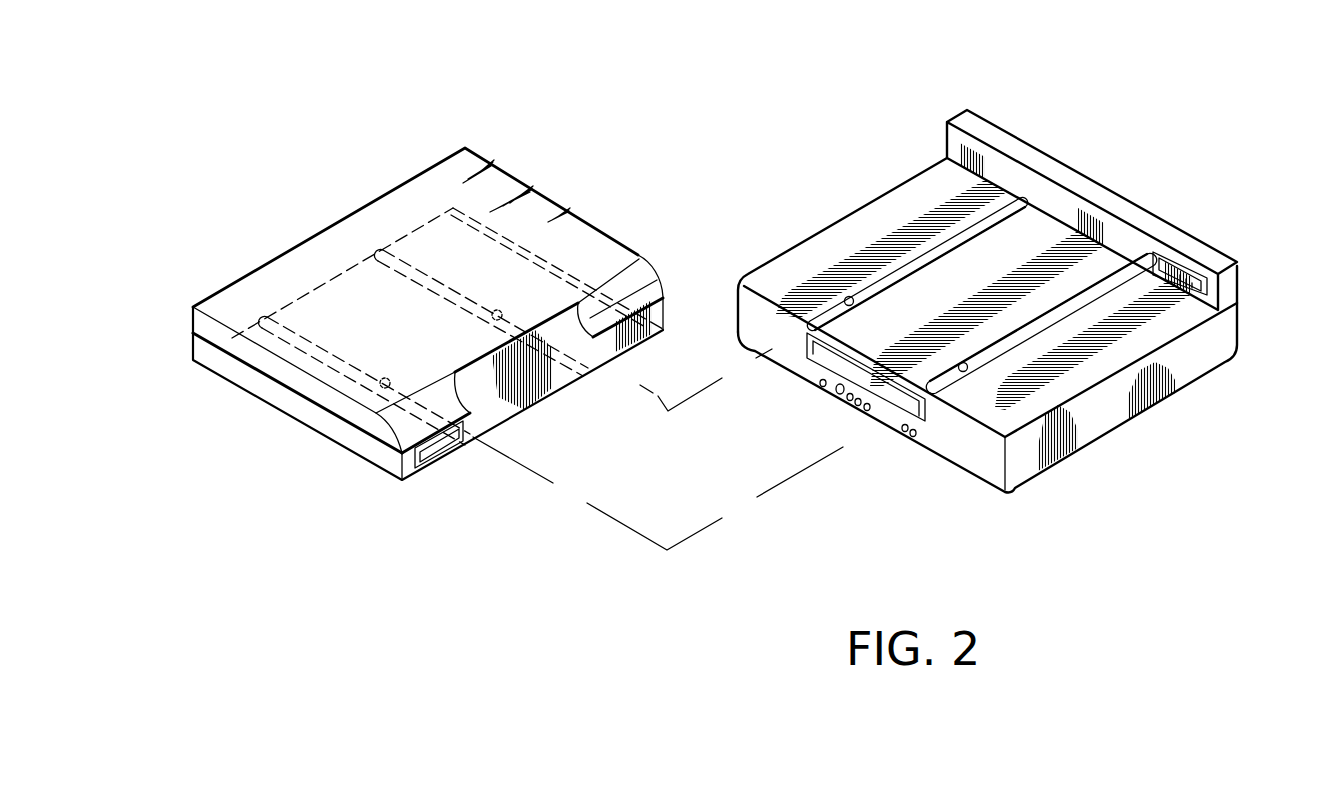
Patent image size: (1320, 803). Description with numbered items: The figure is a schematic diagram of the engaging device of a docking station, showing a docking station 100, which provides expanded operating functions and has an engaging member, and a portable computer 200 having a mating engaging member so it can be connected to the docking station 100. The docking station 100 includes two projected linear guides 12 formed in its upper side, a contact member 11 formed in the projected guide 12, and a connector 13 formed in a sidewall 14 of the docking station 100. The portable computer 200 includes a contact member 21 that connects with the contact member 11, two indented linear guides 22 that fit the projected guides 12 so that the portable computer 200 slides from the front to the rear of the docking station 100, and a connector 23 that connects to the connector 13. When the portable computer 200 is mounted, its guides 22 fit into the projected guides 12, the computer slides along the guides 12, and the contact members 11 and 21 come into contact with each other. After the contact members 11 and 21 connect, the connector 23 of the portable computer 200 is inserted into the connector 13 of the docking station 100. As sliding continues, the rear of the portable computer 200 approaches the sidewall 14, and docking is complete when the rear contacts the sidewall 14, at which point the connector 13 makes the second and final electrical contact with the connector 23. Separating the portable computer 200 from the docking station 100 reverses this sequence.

The docking station 100 is at (1157, 428).
The portable computer 200 is at (308, 411).
The contact member 11 is at (962, 362).
The projected linear guides 12 is at (1010, 207).
The connector 13 is at (1160, 252).
The sidewall 14 is at (1066, 144).
The contact member 21 is at (385, 380).
The indented linear guides 22 is at (472, 436).
The connector 23 is at (443, 453).